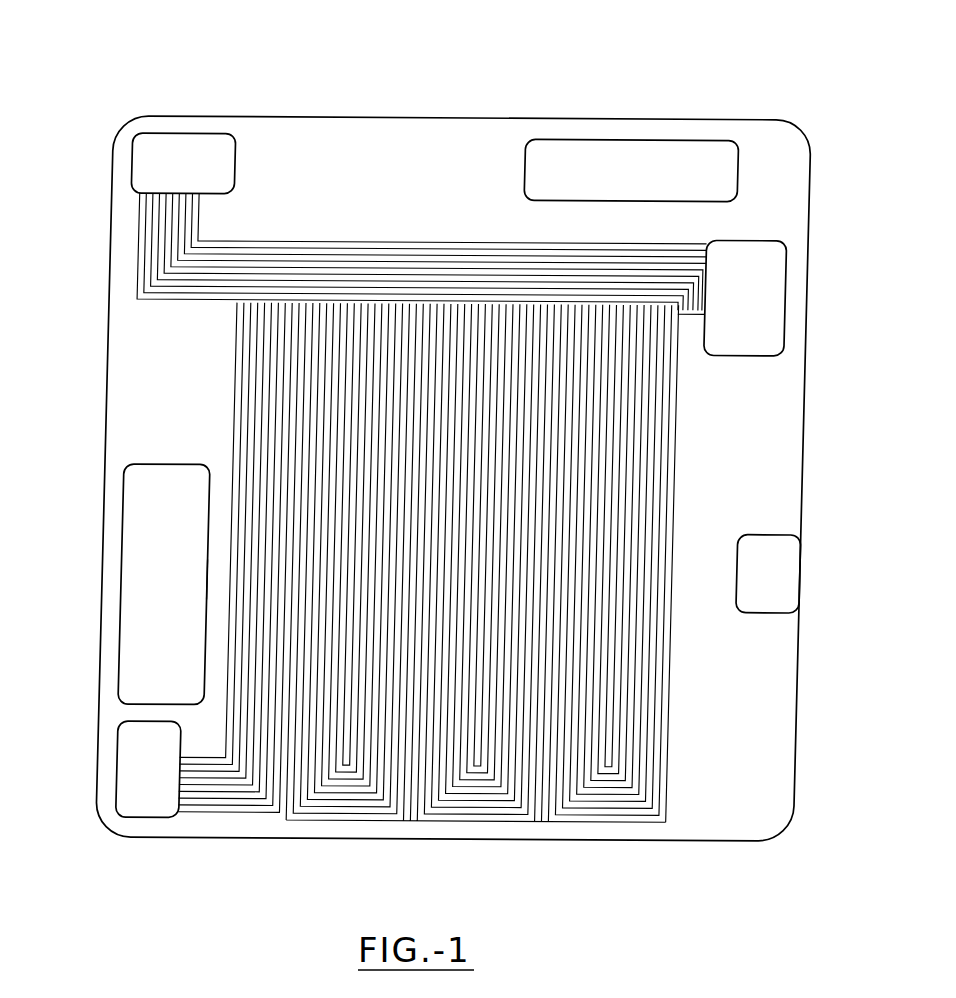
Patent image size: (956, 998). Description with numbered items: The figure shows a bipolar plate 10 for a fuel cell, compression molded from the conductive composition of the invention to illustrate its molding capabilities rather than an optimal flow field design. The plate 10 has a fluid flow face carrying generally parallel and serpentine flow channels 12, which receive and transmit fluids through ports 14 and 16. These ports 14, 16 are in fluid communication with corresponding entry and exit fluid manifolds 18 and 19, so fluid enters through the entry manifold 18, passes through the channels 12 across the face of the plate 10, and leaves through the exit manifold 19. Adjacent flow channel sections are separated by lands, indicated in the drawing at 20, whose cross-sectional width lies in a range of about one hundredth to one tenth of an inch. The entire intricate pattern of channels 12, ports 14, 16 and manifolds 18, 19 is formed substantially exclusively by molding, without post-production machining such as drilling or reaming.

The plate 10 is at (419, 98).
The flow channels 12 is at (228, 378).
The port 14 is at (642, 145).
The port 16 is at (765, 570).
The entry fluid manifold 18 is at (136, 757).
The exit fluid manifold 19 is at (184, 147).
The land region 20 is at (155, 604).